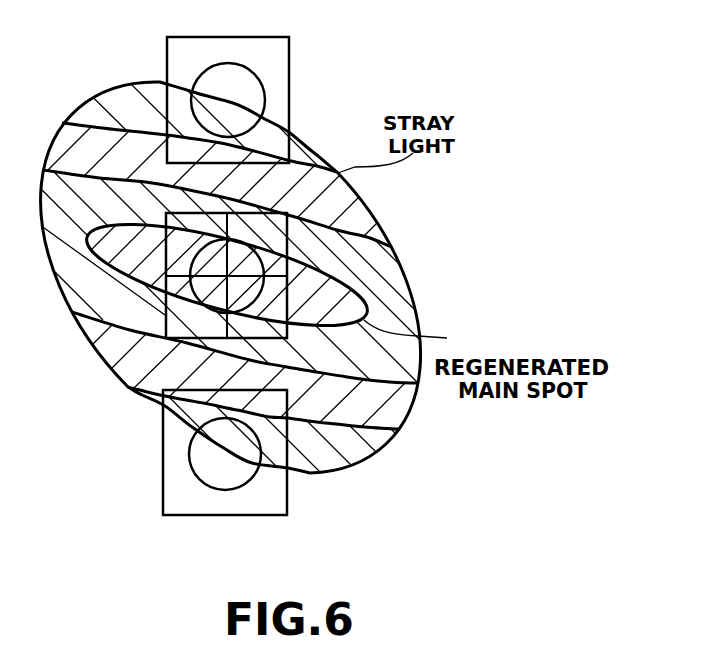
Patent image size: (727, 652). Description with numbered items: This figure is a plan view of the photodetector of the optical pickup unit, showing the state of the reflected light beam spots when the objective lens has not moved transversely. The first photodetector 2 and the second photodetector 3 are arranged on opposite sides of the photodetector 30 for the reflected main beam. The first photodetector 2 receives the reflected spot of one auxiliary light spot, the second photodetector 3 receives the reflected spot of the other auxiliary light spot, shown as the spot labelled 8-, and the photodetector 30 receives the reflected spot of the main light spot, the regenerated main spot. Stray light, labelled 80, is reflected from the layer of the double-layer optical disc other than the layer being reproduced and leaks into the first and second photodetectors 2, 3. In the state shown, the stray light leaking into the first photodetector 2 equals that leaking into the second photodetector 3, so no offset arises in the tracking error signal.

The first photodetector 2 is at (290, 90).
The second photodetector 3 is at (289, 506).
The photodetector for the reflected main beam 30 is at (288, 243).
The stray light region 80 is at (74, 314).
The minus first-order sub-beam spot 8- is at (188, 450).